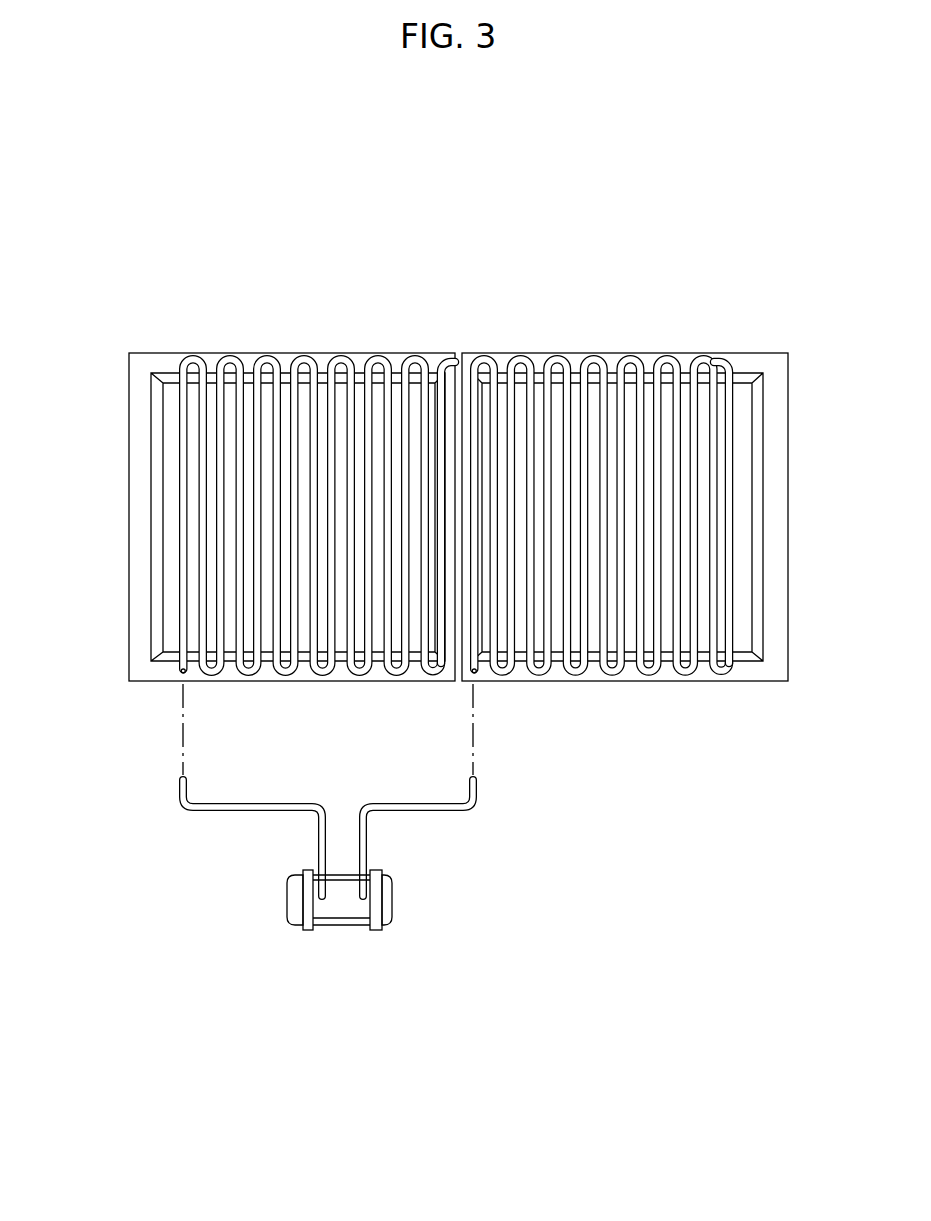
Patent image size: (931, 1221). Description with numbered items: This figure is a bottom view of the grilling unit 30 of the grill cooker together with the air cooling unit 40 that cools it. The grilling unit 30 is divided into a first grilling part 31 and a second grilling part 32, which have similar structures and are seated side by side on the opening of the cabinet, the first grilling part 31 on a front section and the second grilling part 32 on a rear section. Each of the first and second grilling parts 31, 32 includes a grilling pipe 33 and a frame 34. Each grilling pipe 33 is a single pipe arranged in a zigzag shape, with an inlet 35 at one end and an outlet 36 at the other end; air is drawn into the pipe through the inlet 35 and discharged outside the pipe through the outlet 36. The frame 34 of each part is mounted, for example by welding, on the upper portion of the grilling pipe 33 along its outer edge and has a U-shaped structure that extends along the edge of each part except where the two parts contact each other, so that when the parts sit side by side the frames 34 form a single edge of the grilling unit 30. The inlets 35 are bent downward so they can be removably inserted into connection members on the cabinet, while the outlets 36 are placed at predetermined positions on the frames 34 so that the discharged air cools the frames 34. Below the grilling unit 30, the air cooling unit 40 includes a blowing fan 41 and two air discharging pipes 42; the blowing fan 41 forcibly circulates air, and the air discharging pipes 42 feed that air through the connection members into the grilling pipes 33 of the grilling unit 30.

The grilling unit 30 is at (505, 233).
The first grilling part 31 is at (378, 343).
The second grilling part 32 is at (552, 343).
The grilling pipe 33 is at (185, 515).
The frame 34 is at (160, 355).
The inlet 35 is at (183, 673).
The outlet 36 is at (435, 353).
The air cooling unit 40 is at (337, 953).
The blowing fan 41 is at (355, 926).
The air discharging pipe 42 is at (237, 812).